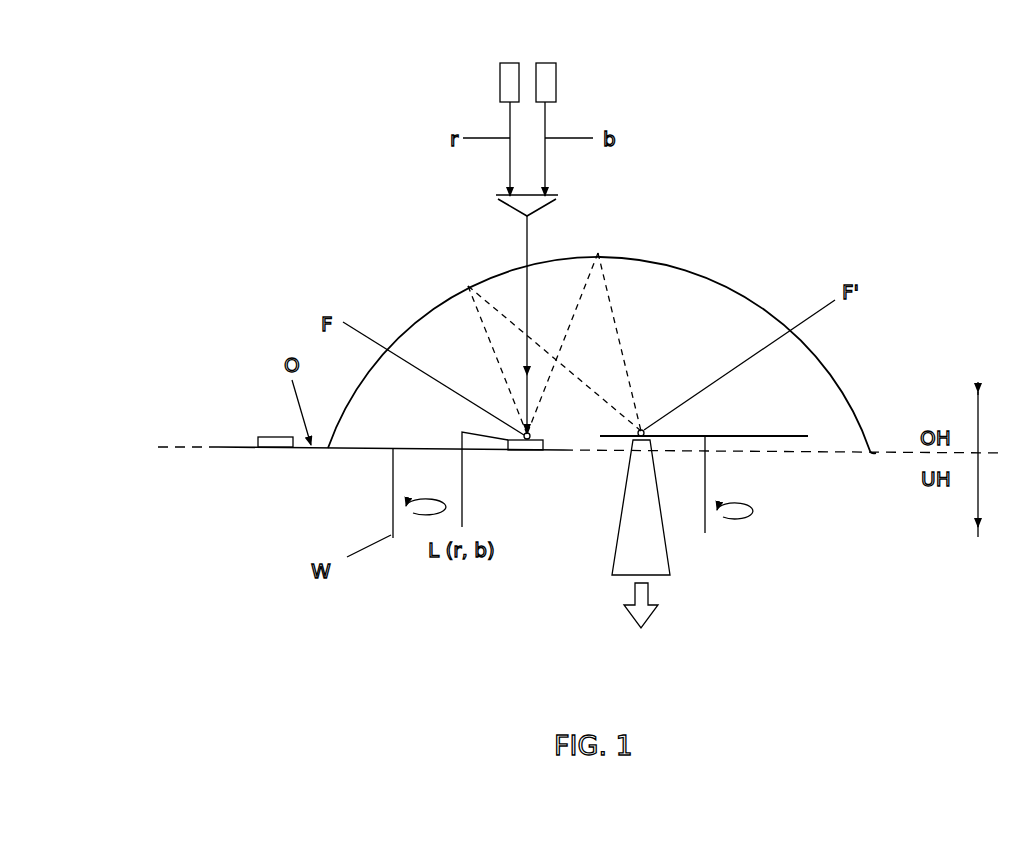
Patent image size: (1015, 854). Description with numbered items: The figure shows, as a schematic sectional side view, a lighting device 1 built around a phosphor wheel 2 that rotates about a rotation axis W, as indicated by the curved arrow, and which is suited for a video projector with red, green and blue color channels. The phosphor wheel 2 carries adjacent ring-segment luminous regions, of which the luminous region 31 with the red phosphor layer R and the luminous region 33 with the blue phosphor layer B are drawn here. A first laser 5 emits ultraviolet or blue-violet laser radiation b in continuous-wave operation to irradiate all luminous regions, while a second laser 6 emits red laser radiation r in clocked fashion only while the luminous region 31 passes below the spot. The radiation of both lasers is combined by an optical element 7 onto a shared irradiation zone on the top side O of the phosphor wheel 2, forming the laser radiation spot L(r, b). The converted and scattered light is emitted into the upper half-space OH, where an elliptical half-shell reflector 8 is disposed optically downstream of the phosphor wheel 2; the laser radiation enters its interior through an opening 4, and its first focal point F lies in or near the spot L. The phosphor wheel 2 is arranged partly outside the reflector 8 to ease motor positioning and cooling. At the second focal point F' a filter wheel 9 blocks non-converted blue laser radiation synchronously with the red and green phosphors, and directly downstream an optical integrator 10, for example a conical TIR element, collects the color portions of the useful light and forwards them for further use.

The lighting device 1 is at (864, 169).
The phosphor wheel 2 is at (302, 450).
The opening 4 is at (535, 252).
The first laser 5 is at (556, 80).
The second laser 6 is at (500, 80).
The optical element 7 is at (505, 205).
The reflector 8 is at (743, 290).
The filter wheel 9 is at (788, 437).
The optical integrator 10 is at (668, 555).
The luminous region 31 is at (527, 448).
The luminous region 33 is at (270, 440).